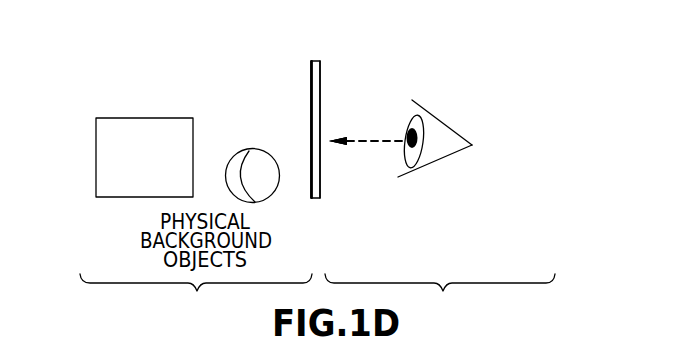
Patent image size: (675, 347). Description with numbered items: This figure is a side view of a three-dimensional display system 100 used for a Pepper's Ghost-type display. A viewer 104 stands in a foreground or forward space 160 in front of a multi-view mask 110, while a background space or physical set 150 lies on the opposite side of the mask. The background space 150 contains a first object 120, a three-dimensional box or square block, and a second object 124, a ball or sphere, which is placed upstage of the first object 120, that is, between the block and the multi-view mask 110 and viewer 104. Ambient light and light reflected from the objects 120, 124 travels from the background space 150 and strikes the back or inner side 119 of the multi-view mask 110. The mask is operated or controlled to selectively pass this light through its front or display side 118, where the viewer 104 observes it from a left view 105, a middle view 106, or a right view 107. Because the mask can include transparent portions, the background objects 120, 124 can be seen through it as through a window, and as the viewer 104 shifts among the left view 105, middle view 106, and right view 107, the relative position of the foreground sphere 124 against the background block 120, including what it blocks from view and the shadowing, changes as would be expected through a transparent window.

The 3D display system 100 is at (88, 50).
The viewer 104 is at (441, 123).
The left view 105 is at (365, 143).
The middle view 106 is at (365, 141).
The right view 107 is at (365, 141).
The multi-view mask 110 is at (317, 229).
The front or display side 118 is at (320, 90).
The back or inner side 119 is at (311, 73).
The first object 120 is at (100, 220).
The second object 124 is at (252, 126).
The background space 150 is at (196, 296).
The forward space 160 is at (440, 296).